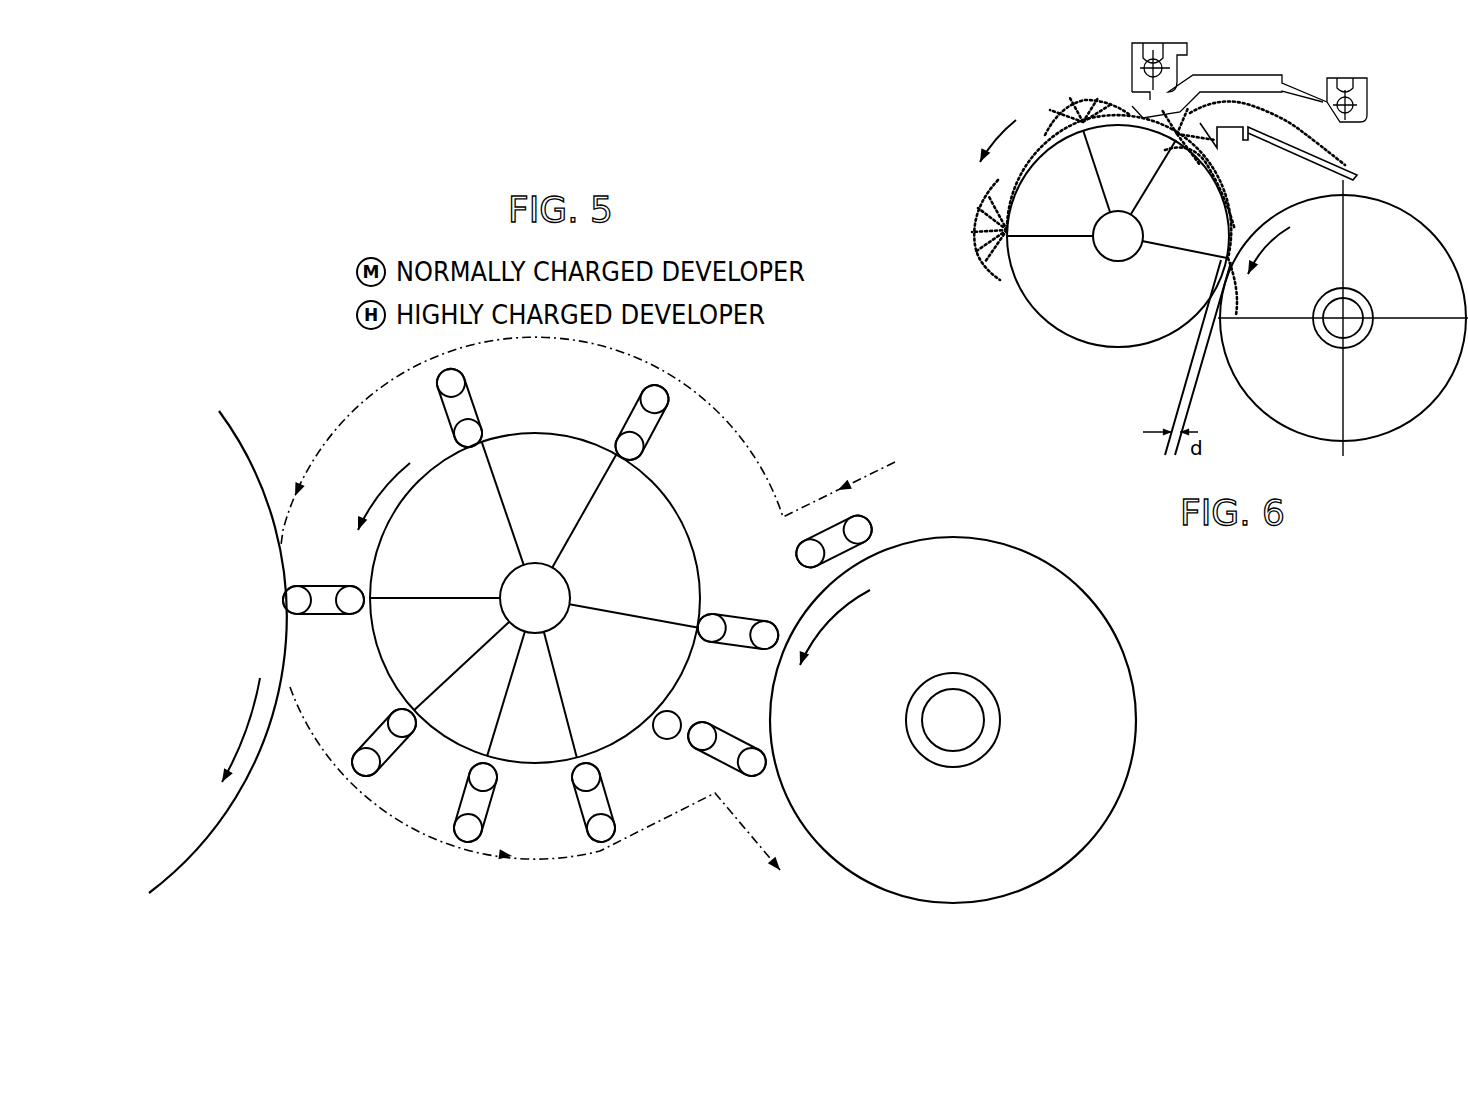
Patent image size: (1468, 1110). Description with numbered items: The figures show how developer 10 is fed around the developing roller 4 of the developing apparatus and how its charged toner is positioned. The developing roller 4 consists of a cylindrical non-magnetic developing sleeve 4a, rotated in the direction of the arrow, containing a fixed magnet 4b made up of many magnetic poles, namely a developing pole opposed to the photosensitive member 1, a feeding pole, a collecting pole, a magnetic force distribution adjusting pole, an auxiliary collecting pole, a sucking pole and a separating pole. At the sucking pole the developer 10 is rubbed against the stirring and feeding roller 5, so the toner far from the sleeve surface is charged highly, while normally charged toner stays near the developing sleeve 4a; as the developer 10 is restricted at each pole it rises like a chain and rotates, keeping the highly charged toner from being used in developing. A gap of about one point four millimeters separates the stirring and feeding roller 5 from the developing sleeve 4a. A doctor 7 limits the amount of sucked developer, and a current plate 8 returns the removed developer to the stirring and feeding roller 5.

In FIG. 5, the photosensitive member 1 is at (238, 432).
In FIG. 5, the developing roller 4 is at (532, 616).
In FIG. 6, the developing roller 4 is at (1055, 312).
In FIG. 5, the developing sleeve 4a is at (667, 497).
In FIG. 5, the magnet 4b is at (520, 447).
In FIG. 5, the stirring & feeding roller 5 is at (1040, 583).
In FIG. 6, the stirring & feeding roller 5 is at (1418, 247).
In FIG. 6, the doctor 7 is at (1138, 103).
In FIG. 6, the current plate 8 is at (1312, 165).
In FIG. 5, the developer 10 is at (331, 618).